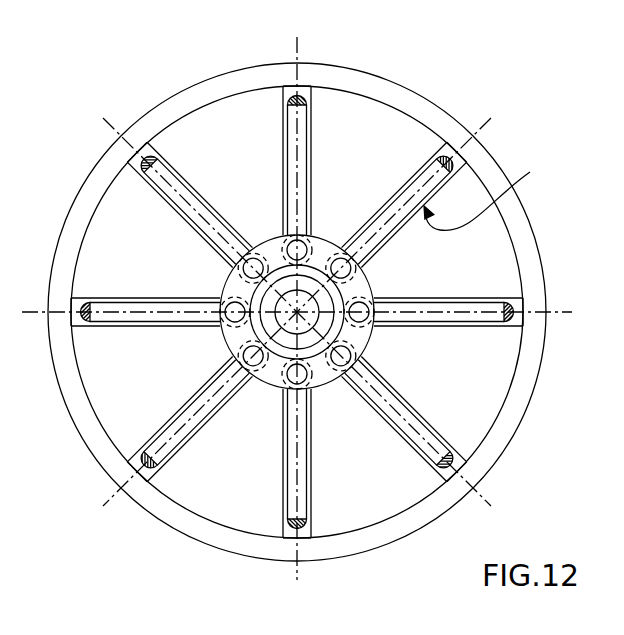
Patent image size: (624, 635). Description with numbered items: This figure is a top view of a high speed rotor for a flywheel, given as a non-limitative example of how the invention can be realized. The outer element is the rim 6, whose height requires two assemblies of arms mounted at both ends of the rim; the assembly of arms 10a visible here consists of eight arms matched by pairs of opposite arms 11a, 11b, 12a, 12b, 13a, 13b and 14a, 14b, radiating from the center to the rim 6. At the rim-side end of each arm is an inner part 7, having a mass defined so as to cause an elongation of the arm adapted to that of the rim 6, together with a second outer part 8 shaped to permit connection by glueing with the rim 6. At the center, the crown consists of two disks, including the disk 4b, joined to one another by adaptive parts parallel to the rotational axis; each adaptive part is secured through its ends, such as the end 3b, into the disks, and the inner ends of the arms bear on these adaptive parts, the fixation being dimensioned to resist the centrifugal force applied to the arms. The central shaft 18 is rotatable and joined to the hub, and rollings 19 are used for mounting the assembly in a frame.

The end of adaptive part 3b is at (251, 258).
The disk 4b is at (353, 288).
The rim 6 is at (432, 103).
The inner part 7 is at (312, 106).
The outer part 8 is at (303, 85).
The assembly of arms 10a is at (496, 192).
The arm 11a is at (327, 163).
The arm 11b is at (305, 478).
The arm 12a is at (213, 208).
The arm 12b is at (420, 428).
The arm 13a is at (148, 307).
The arm 13b is at (455, 305).
The arm 14a is at (193, 423).
The arm 14b is at (406, 185).
The central shaft 18 is at (303, 330).
The rollings 19 is at (317, 247).